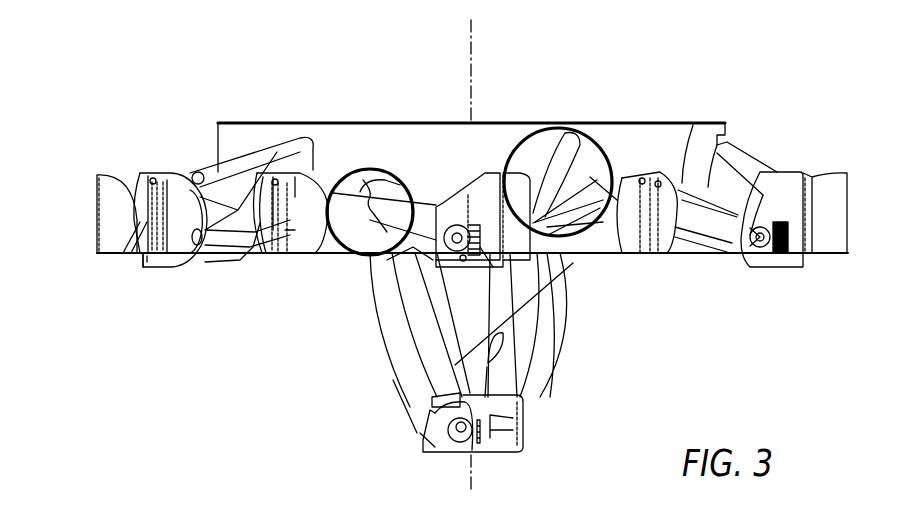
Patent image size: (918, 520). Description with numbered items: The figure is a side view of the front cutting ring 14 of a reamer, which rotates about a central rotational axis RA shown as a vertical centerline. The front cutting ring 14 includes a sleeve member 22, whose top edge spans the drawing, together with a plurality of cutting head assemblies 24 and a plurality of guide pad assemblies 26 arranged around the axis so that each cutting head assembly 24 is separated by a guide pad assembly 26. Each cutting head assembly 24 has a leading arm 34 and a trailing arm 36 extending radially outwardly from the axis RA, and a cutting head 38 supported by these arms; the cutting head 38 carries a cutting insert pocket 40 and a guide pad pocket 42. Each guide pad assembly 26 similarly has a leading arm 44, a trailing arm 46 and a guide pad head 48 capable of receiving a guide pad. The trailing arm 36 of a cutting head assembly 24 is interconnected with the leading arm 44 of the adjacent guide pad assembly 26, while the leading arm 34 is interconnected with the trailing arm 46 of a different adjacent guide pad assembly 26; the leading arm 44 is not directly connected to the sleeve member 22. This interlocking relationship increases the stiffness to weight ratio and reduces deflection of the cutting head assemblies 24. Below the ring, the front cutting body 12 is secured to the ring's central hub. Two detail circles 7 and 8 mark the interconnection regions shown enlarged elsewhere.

The central rotational axis RA is at (472, 42).
The front cutting ring 14 is at (767, 78).
The sleeve member 22 is at (364, 140).
The guide pad head 48 is at (93, 226).
The guide pad assembly 26 is at (113, 268).
The cutting head assembly 24 is at (157, 273).
The leading arm 34 is at (425, 213).
The detail circle 7 is at (350, 175).
The detail circle 8 is at (588, 138).
The trailing arm 36 is at (535, 167).
The trailing arm 46 is at (328, 257).
The guide pad pocket 42 is at (535, 252).
The cutting insert pocket 40 is at (505, 258).
The cutting head 38 is at (135, 273).
The leading arm 44 is at (598, 233).
The front cutting body 12 is at (375, 378).